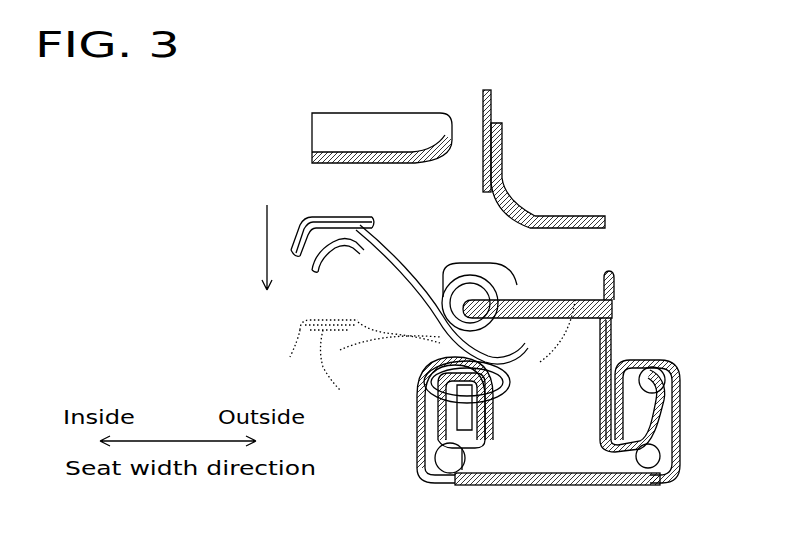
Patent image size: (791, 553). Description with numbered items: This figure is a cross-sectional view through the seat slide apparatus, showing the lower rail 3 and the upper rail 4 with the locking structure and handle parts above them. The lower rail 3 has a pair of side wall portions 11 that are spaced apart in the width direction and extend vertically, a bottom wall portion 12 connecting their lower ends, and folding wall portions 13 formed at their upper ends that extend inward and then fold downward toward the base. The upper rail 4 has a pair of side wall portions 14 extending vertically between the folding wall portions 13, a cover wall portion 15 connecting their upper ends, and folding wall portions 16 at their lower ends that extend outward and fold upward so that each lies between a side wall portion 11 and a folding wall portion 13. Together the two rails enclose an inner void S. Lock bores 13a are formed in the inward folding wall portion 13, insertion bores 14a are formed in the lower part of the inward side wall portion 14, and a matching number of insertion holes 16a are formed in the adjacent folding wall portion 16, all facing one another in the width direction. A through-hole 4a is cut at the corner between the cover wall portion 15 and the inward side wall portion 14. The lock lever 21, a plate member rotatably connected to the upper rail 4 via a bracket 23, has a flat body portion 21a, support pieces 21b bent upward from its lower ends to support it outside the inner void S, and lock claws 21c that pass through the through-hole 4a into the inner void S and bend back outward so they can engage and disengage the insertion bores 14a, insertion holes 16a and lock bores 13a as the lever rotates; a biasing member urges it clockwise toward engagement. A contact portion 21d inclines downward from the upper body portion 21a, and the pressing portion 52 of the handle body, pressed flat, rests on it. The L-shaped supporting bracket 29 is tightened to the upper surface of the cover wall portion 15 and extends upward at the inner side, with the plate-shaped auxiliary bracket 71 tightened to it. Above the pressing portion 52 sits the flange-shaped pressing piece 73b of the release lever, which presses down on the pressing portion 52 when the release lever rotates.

The lower rail 3 is at (543, 439).
The upper rail 4 is at (613, 330).
The through-hole 4a is at (450, 350).
The side wall portion 11 is at (435, 458).
The bottom wall portion 12 is at (598, 486).
The folding wall portion 13 is at (490, 444).
The lock bore 13a is at (470, 473).
The side wall portion 14 is at (505, 383).
The insertion bore 14a is at (492, 399).
The cover wall portion 15 is at (590, 298).
The folding wall portion 16 is at (417, 430).
The insertion hole 16a is at (417, 405).
The lock lever 21 is at (420, 309).
The body portion 21a is at (418, 275).
The support piece 21b is at (475, 273).
The lock claw 21c is at (425, 370).
The contact portion 21d is at (372, 245).
The bracket 23 is at (615, 282).
The supporting bracket 29 is at (572, 215).
The pressing portion 52 is at (416, 200).
The auxiliary bracket 71 is at (492, 110).
The pressing piece 73b is at (312, 160).
The inner void S is at (581, 365).